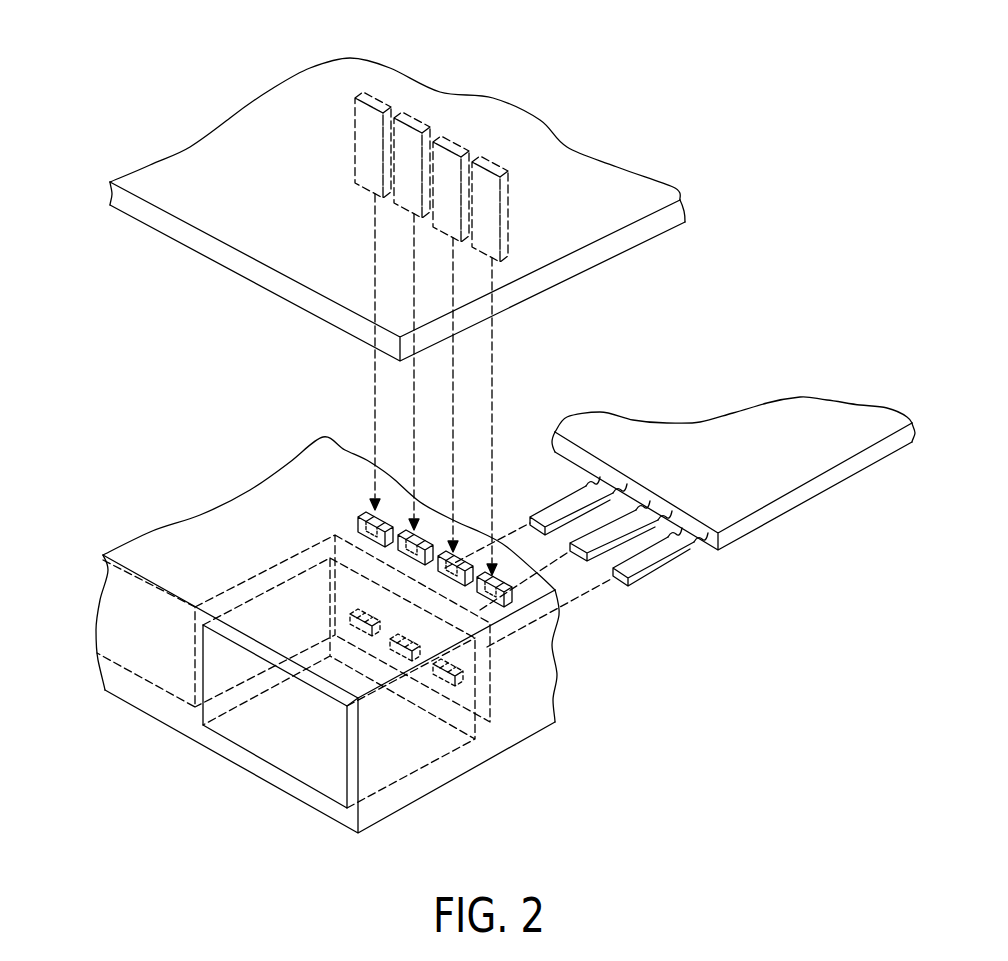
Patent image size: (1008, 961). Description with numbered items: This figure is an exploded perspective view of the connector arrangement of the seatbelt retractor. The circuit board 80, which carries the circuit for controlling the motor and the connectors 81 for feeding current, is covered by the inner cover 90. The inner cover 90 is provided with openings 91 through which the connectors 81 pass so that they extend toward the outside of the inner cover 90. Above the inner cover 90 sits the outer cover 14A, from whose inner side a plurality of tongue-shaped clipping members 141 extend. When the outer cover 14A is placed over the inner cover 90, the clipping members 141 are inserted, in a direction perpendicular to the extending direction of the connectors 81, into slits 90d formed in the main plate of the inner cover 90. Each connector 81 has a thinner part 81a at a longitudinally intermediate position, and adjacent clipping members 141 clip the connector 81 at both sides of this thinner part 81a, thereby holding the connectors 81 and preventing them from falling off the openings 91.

The outer cover 14A is at (130, 234).
The clipping members 141 is at (378, 92).
The inner cover 90 is at (200, 505).
The slits 90d is at (356, 498).
The openings 91 is at (428, 634).
The circuit board 80 is at (798, 470).
The connectors 81 is at (598, 533).
The thinner part 81a is at (586, 481).